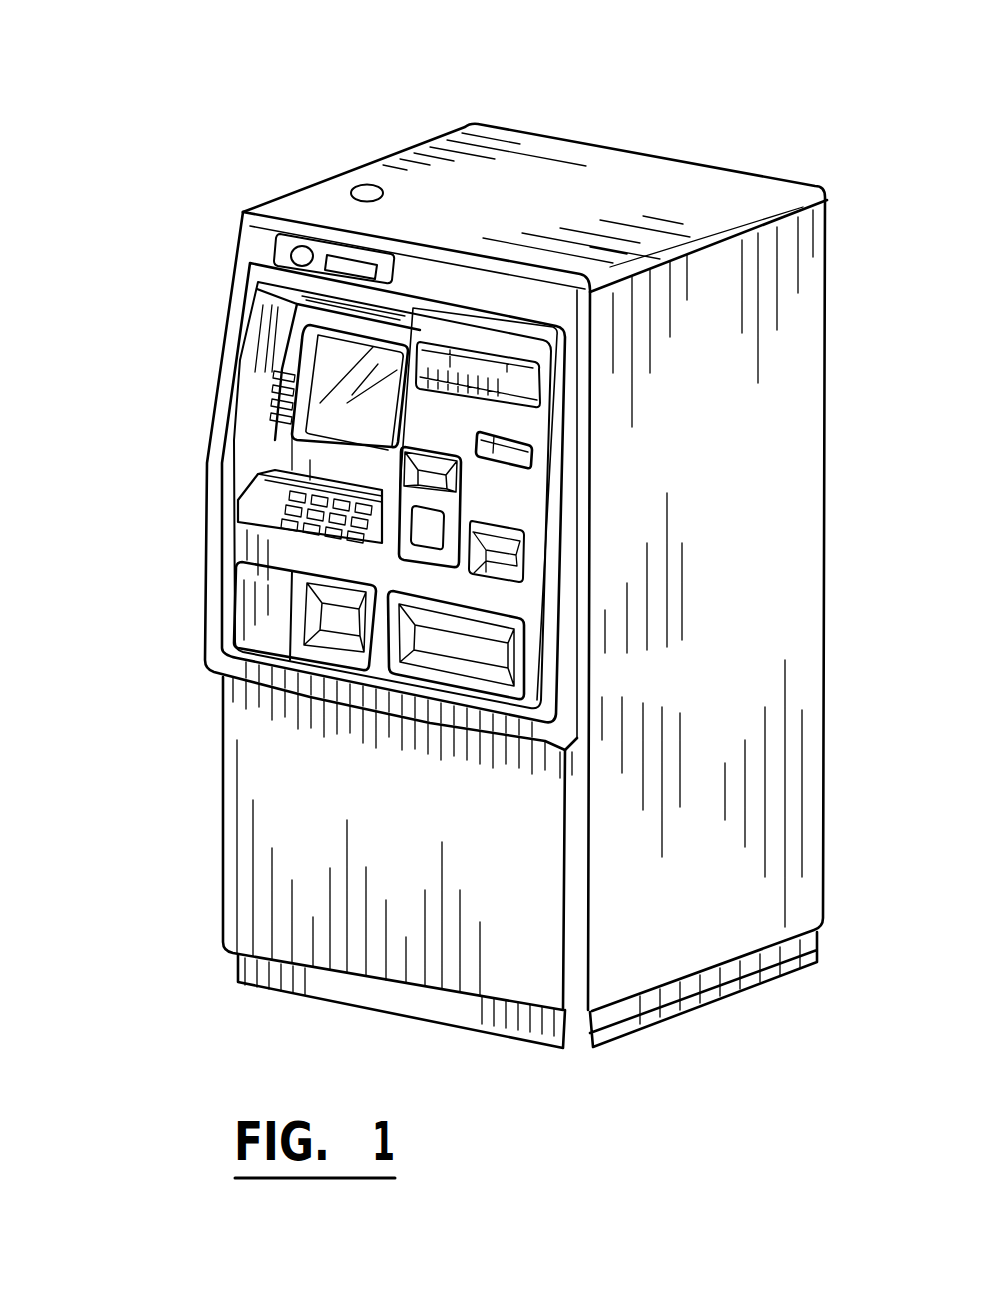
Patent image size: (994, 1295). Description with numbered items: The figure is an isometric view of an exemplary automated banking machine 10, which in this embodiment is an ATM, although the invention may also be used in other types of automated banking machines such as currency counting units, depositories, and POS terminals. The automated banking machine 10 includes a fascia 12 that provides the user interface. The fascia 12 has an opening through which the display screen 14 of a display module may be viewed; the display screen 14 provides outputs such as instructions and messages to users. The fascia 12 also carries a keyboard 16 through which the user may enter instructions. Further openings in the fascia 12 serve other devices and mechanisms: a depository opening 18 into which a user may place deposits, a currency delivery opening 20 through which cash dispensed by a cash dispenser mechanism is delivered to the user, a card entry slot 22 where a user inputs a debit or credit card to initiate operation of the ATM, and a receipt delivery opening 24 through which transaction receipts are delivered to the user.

The automated banking machine 10 is at (800, 131).
The fascia 12 is at (552, 495).
The display screen 14 is at (347, 403).
The keyboard 16 is at (323, 510).
The depository opening 18 is at (307, 630).
The currency delivery opening 20 is at (520, 662).
The card entry slot 22 is at (453, 472).
The receipt delivery opening 24 is at (508, 440).